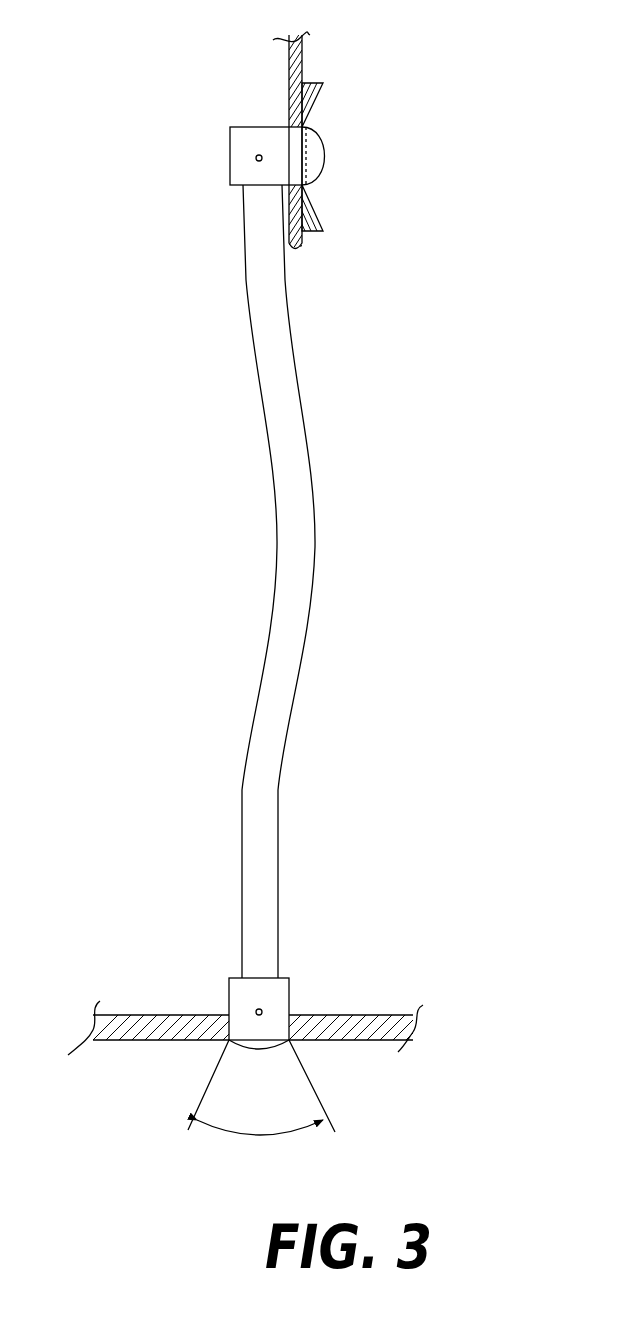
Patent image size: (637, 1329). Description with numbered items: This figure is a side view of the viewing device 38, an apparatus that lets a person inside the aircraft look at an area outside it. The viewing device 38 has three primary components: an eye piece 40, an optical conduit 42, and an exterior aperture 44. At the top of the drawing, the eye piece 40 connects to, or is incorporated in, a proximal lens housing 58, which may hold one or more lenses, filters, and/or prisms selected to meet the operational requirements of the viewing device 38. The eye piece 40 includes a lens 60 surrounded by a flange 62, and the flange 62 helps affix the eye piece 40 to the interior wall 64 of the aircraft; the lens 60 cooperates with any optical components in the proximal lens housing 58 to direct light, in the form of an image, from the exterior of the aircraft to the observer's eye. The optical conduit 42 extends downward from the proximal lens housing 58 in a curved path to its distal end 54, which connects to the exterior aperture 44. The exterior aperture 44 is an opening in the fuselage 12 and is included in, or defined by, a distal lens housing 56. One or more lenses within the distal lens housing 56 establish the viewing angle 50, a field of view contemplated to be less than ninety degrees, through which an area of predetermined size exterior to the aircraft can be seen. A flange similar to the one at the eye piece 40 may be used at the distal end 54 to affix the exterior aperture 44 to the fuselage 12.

The fuselage 12 is at (132, 1040).
The viewing device 38 is at (418, 421).
The eye piece 40 is at (327, 155).
The optical conduit 42 is at (315, 533).
The exterior aperture 44 is at (250, 1049).
The viewing angle 50 is at (252, 1136).
The distal end 54 is at (278, 930).
The distal lens housing 56 is at (262, 1011).
The proximal lens housing 58 is at (256, 157).
The lens 60 is at (326, 161).
The flange 62 is at (325, 221).
The interior wall 64 is at (289, 45).